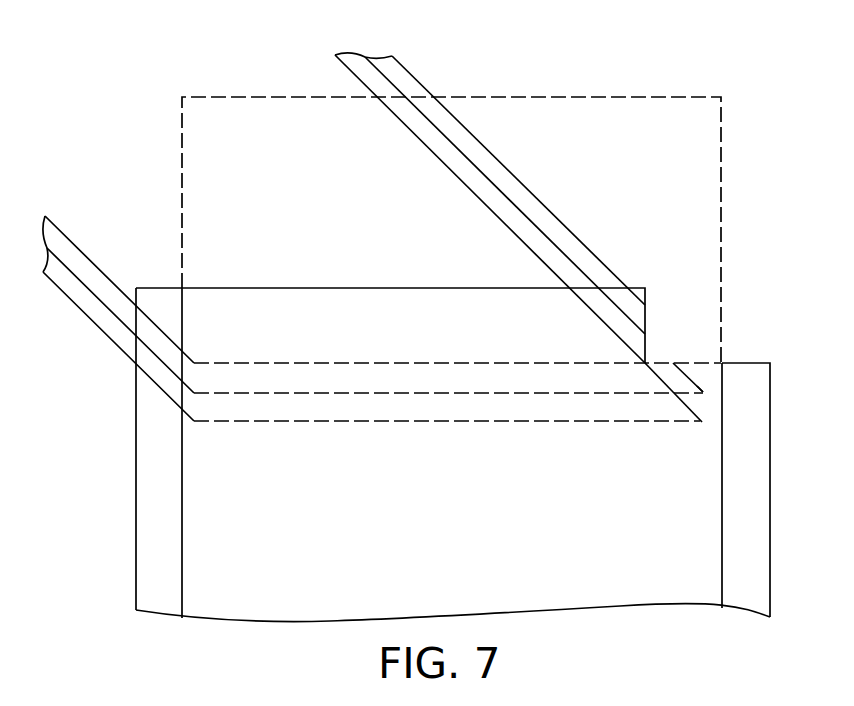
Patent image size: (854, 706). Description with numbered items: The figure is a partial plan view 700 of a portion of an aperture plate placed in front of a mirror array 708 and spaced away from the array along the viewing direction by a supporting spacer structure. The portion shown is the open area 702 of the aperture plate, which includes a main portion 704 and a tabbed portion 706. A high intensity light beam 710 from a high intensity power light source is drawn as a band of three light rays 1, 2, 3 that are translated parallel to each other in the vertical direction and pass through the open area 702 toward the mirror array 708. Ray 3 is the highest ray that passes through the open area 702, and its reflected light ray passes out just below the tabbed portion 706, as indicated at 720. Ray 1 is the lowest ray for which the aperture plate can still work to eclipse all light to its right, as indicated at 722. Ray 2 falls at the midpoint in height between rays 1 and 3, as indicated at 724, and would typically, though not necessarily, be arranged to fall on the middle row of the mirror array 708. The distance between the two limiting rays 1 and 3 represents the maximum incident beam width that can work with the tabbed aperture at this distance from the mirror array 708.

The partial plan view 700 is at (433, 322).
The open area 702 is at (112, 441).
The main portion 704 is at (774, 490).
The tabbed portion 706 is at (276, 288).
The mirror array 708 is at (688, 97).
The high intensity light beam 710 is at (574, 259).
The light ray 1 is at (518, 238).
The light ray 2 is at (507, 195).
The light ray 3 is at (557, 219).
The reflected light exit location below tab portion 720 is at (737, 301).
The eclipse location of lowest ray 722 is at (675, 466).
The midpoint ray location 724 is at (782, 337).